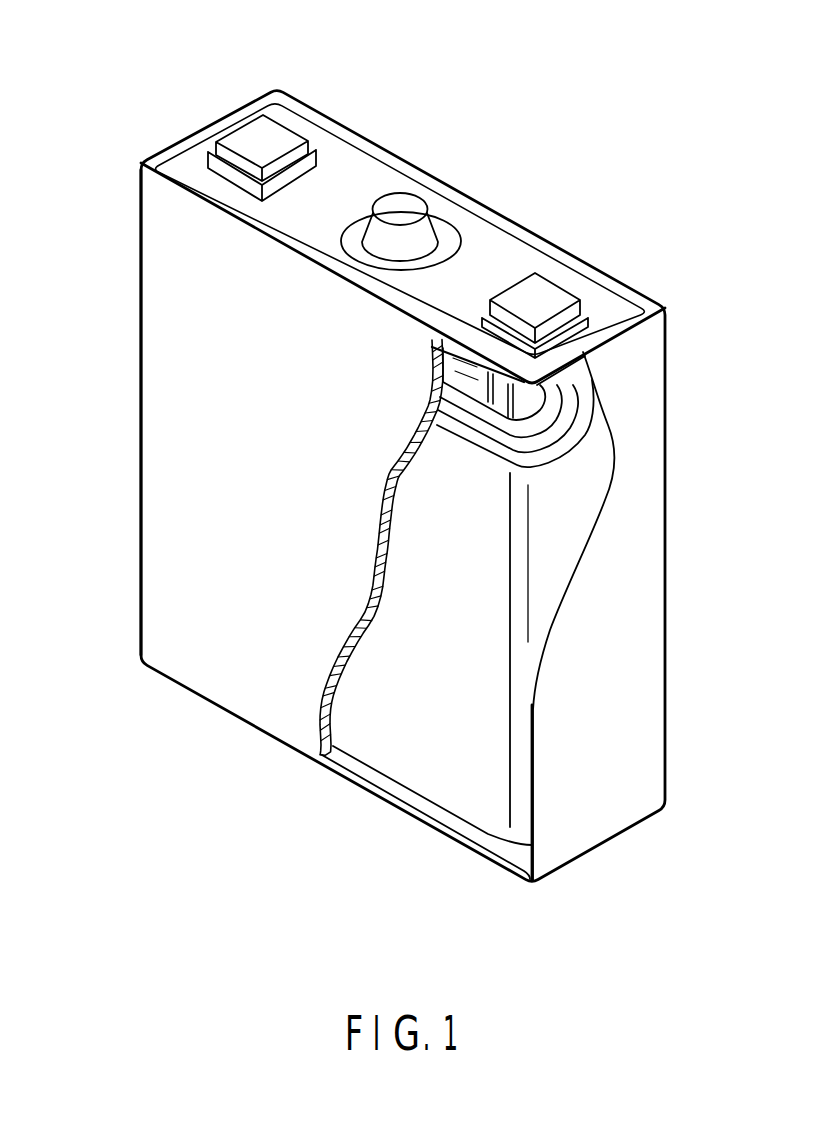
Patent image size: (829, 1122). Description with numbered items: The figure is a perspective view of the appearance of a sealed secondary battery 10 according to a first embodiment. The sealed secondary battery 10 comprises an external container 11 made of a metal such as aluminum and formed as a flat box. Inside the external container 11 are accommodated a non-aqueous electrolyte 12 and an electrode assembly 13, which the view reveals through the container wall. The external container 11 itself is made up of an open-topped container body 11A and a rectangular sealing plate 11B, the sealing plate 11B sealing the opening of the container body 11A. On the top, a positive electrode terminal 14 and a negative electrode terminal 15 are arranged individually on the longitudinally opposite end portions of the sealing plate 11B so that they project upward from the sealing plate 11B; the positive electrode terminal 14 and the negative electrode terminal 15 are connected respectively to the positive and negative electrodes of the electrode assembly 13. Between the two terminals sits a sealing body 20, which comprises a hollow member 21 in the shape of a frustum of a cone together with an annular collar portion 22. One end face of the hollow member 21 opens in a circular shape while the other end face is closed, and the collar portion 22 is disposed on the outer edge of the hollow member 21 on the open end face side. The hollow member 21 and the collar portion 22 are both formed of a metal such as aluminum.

The sealed secondary battery 10 is at (320, 88).
The external container 11 is at (122, 287).
The container body 11A is at (147, 390).
The sealing plate 11B is at (507, 238).
The non-aqueous electrolyte 12 is at (603, 466).
The electrode assembly 13 is at (413, 778).
The positive electrode terminal 14 is at (245, 135).
The negative electrode terminal 15 is at (547, 292).
The sealing body 20 is at (390, 178).
The hollow member 21 is at (428, 222).
The collar portion 22 is at (436, 256).